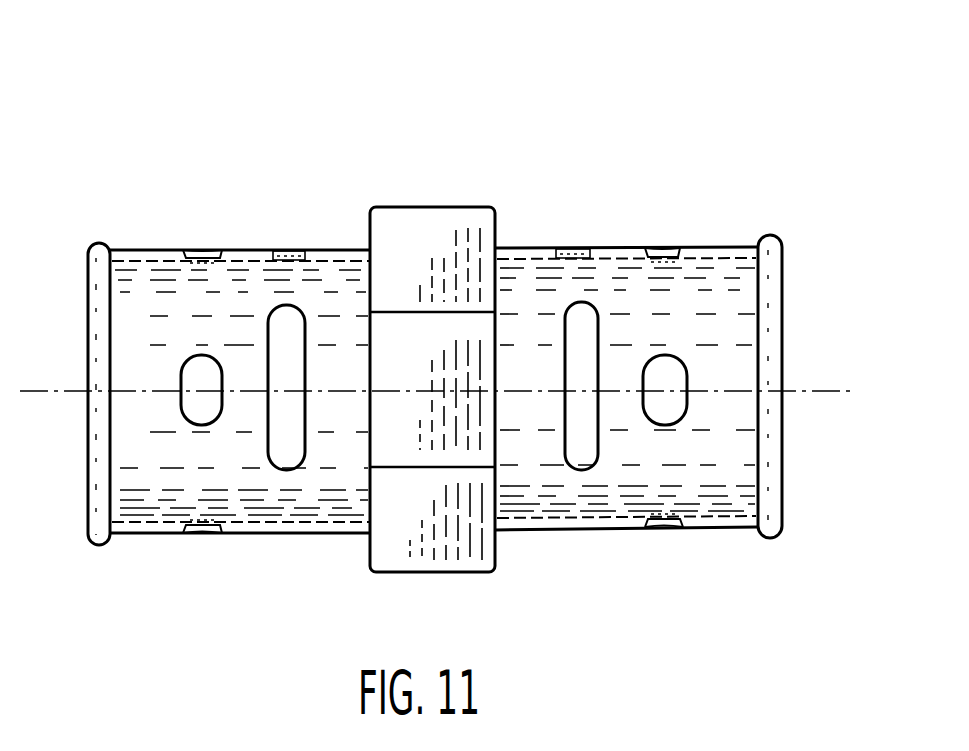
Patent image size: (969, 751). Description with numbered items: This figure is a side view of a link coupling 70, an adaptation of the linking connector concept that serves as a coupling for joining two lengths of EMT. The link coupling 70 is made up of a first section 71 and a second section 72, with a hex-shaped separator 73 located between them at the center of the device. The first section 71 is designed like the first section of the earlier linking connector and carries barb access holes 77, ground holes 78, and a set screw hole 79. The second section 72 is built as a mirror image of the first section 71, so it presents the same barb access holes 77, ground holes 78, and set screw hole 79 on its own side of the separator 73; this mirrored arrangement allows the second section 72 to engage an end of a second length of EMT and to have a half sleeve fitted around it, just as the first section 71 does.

The link coupling 70 is at (439, 326).
The first section 71 is at (245, 248).
The second section 72 is at (722, 247).
The hex-shaped separator 73 is at (98, 243).
The barb access holes 77 is at (204, 256).
The ground holes 78 is at (296, 455).
The set screw hole 79 is at (290, 252).